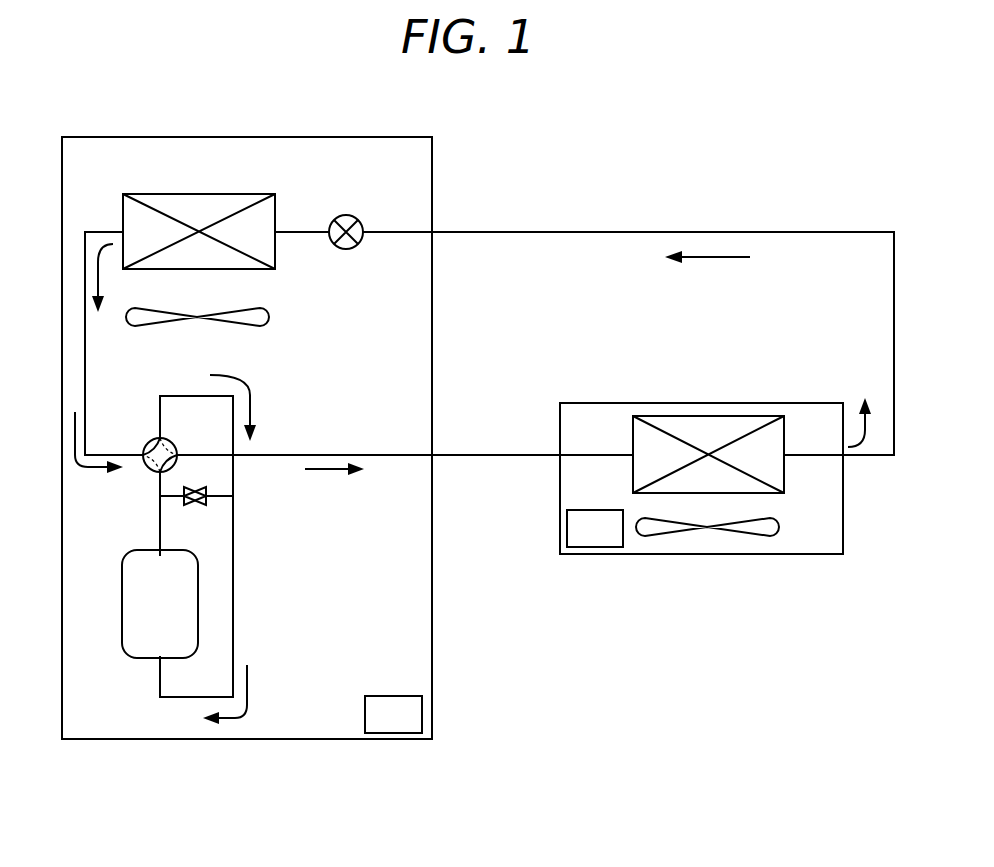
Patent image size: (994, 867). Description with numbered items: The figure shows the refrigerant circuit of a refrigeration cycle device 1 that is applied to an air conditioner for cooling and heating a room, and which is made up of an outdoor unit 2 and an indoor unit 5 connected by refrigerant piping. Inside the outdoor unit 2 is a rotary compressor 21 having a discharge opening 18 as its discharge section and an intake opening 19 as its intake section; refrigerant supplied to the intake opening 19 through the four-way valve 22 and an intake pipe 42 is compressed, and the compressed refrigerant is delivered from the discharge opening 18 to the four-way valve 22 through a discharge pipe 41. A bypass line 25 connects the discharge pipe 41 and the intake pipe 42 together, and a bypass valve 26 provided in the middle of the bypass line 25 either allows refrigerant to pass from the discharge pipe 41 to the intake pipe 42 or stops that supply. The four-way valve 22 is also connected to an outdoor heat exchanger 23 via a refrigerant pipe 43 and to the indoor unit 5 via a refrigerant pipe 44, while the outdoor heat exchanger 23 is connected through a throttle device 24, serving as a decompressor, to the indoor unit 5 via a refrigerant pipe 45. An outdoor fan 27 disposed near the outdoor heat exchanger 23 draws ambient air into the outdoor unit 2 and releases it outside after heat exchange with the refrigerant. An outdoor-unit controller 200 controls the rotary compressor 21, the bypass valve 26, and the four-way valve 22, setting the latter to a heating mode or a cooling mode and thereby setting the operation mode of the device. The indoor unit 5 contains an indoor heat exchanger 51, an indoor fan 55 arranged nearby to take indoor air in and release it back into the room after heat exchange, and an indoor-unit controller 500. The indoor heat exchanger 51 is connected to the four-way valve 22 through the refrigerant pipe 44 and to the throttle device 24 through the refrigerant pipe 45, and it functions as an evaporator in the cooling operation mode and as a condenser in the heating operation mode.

The refrigeration cycle device 1 is at (499, 799).
The outdoor unit 2 is at (195, 740).
The indoor unit 5 is at (763, 556).
The discharge opening 18 is at (160, 555).
The intake opening 19 is at (160, 662).
The rotary compressor 21 is at (122, 617).
The four-way valve 22 is at (148, 443).
The outdoor heat exchanger 23 is at (165, 194).
The throttle device 24 is at (347, 214).
The bypass line 25 is at (207, 496).
The bypass valve 26 is at (192, 503).
The outdoor fan 27 is at (222, 321).
The discharge pipe 41 is at (160, 535).
The intake pipe 42 is at (234, 613).
The refrigerant pipe 43 is at (88, 350).
The refrigerant pipe 44 is at (388, 453).
The refrigerant pipe 45 is at (393, 231).
The indoor heat exchanger 51 is at (718, 416).
The indoor fan 55 is at (660, 536).
The outdoor-unit controller 200 is at (393, 735).
The indoor-unit controller 500 is at (583, 556).